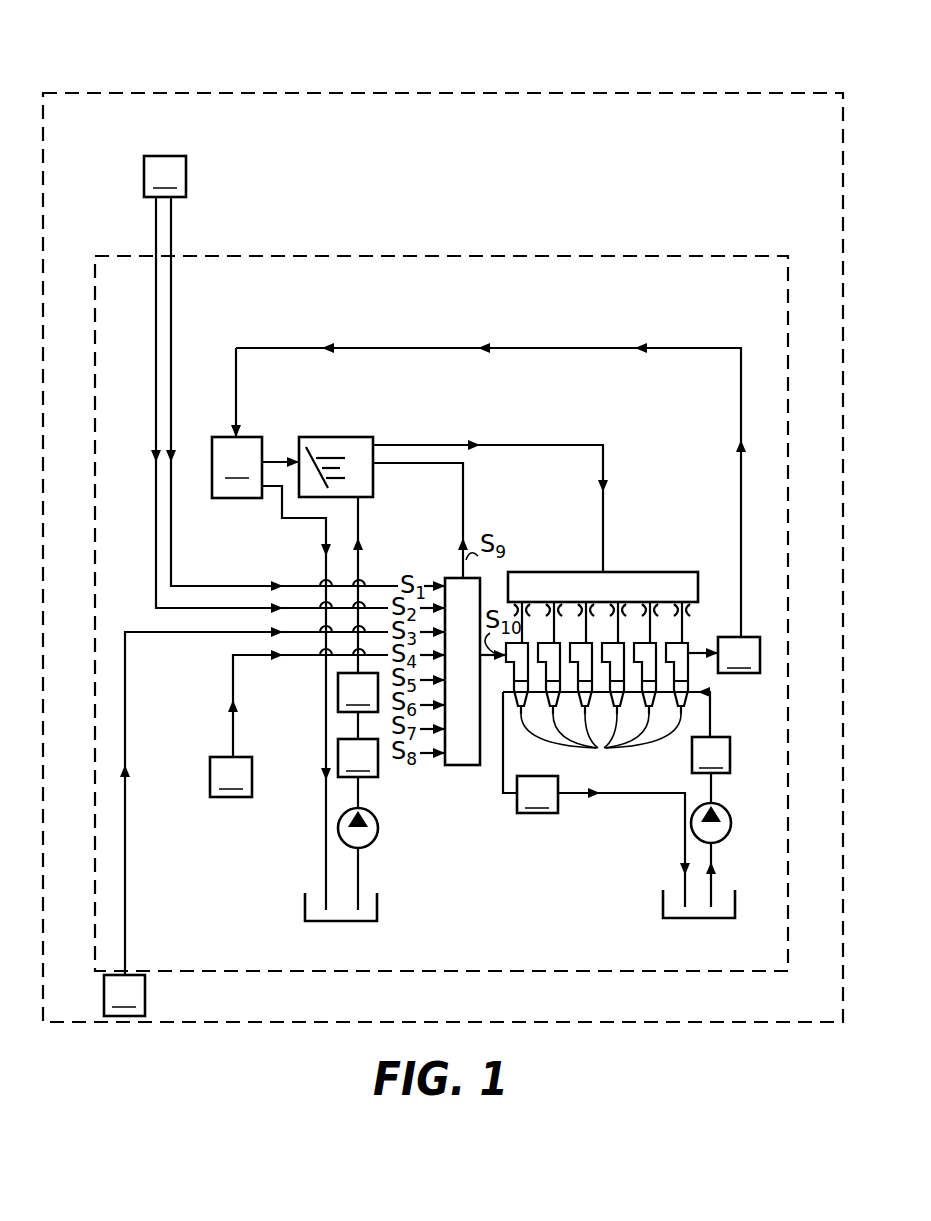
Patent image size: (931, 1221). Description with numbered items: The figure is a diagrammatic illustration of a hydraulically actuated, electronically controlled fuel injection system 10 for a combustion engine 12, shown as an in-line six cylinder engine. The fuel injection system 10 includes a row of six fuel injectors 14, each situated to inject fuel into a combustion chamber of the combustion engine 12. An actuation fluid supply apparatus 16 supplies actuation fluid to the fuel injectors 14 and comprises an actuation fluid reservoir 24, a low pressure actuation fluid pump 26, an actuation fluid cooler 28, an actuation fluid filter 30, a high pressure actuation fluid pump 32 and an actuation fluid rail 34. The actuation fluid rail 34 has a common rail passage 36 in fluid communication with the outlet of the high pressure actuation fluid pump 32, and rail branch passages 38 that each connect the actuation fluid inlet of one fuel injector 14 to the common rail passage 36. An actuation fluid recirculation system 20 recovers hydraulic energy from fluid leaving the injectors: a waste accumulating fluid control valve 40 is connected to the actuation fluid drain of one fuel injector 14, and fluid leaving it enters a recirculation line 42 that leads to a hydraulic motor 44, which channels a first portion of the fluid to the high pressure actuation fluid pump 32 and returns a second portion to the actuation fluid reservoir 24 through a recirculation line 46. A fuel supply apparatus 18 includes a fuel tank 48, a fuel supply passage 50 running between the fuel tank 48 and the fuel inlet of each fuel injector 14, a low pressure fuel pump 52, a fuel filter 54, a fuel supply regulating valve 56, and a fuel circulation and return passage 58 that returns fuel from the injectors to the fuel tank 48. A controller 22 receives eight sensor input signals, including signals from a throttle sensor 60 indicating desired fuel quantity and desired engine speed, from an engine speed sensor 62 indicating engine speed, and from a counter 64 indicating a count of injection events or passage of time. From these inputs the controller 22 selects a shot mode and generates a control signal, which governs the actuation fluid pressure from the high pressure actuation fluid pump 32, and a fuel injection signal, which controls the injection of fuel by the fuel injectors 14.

The fuel injection system 10 is at (732, 237).
The combustion engine 12 is at (732, 82).
The fuel injectors 14 is at (597, 689).
The actuation fluid supply apparatus 16 is at (350, 932).
The fuel supply apparatus 18 is at (700, 932).
The actuation fluid recirculation system 20 is at (212, 345).
The controller 22 is at (463, 766).
The actuation fluid reservoir 24 is at (305, 900).
The low pressure actuation fluid pump 26 is at (378, 828).
The actuation fluid cooler 28 is at (358, 744).
The actuation fluid filter 30 is at (358, 604).
The high pressure actuation fluid pump 32 is at (340, 437).
The actuation fluid rail 34 is at (652, 570).
The common rail passage 36 is at (556, 570).
The rail branch passages 38 is at (690, 616).
The waste accumulating fluid control valve 40 is at (724, 655).
The recirculation line 42 is at (404, 348).
The hydraulic motor 44 is at (271, 498).
The recirculation line 46 is at (326, 715).
The fuel tank 48 is at (663, 900).
The fuel supply passage 50 is at (712, 720).
The low pressure fuel pump 52 is at (730, 815).
The fuel filter 54 is at (711, 755).
The fuel supply regulating valve 56 is at (530, 752).
The fuel circulation and return passage 58 is at (685, 822).
The throttle sensor 60 is at (271, 384).
The engine speed sensor 62 is at (246, 821).
The counter 64 is at (299, 723).